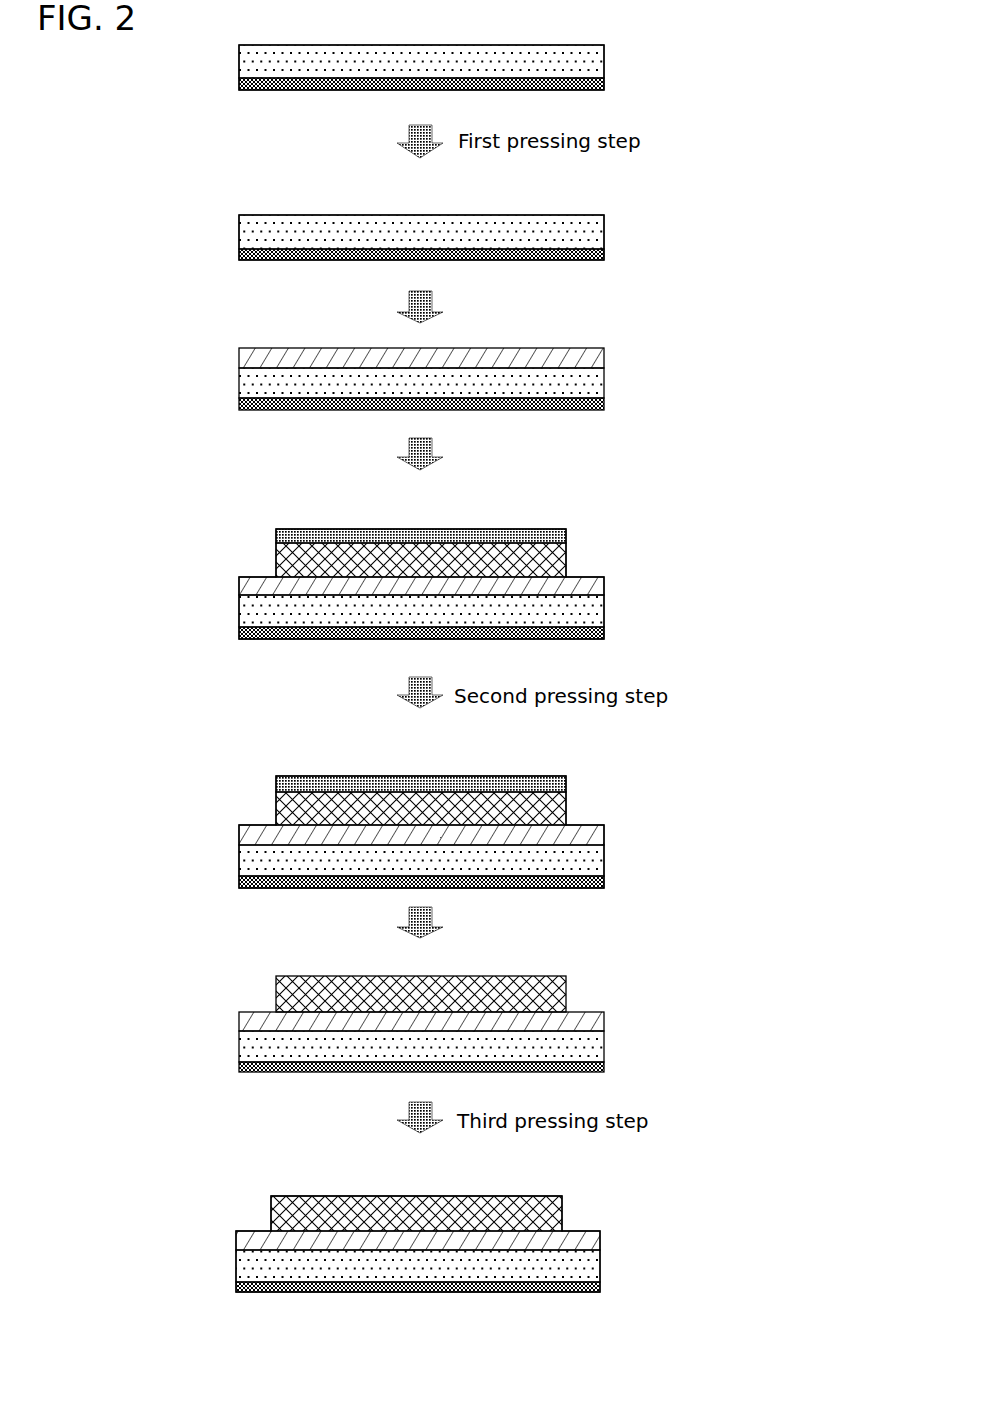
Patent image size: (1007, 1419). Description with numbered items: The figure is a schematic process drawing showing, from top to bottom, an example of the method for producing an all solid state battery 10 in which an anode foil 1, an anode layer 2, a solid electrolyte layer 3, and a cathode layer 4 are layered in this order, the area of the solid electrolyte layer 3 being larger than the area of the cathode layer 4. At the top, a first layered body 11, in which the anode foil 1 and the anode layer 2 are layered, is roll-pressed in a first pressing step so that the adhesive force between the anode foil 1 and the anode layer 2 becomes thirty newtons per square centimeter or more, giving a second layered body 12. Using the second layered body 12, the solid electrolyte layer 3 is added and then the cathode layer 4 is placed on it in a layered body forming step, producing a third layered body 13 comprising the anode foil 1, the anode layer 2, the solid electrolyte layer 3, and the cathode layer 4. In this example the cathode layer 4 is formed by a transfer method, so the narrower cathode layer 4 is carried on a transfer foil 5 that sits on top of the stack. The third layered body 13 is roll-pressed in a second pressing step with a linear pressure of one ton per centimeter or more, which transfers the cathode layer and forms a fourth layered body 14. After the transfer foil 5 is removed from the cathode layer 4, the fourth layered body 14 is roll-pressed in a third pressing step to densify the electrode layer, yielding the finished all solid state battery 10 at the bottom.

The anode foil 1 is at (594, 87).
The anode layer 2 is at (594, 62).
The solid electrolyte layer 3 is at (594, 357).
The cathode layer 4 is at (552, 556).
The transfer foil 5 is at (552, 533).
The all solid state battery 10 is at (629, 1169).
The first layered body 11 is at (626, 24).
The second layered body 12 is at (631, 192).
The third layered body 13 is at (622, 506).
The fourth layered body 14 is at (626, 741).